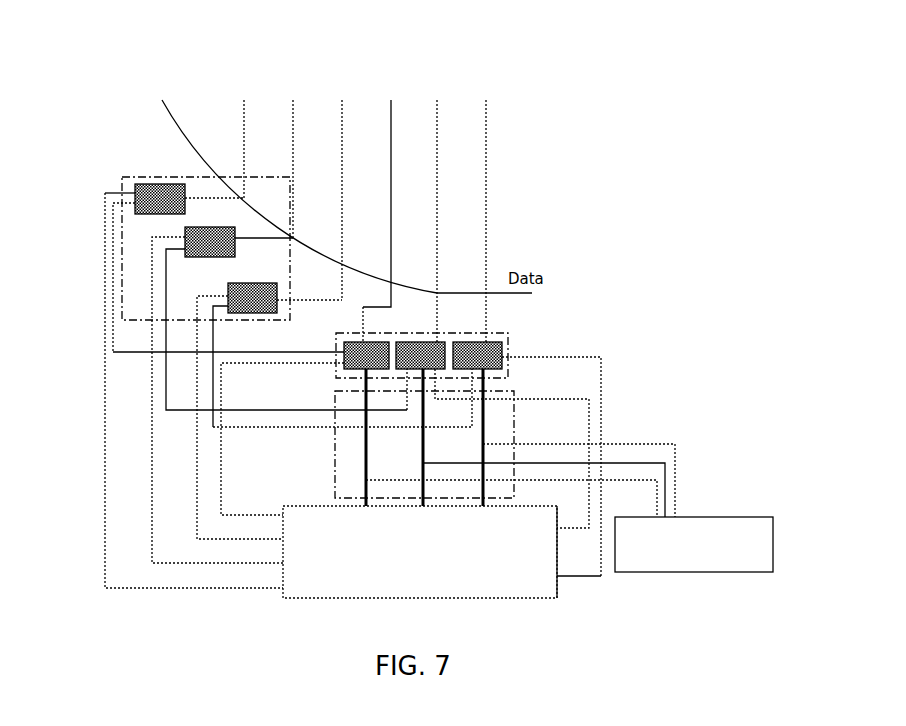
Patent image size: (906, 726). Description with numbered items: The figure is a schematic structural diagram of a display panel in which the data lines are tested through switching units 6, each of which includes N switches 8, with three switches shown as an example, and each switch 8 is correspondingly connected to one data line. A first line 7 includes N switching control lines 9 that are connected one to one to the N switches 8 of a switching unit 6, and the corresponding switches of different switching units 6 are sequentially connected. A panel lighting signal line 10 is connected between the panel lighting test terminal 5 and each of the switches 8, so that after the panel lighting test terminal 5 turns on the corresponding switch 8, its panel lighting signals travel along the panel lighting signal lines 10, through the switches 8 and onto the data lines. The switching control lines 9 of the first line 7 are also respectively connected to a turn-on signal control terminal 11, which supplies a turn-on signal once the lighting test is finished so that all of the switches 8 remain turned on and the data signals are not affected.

The panel lighting test terminal 5 is at (303, 503).
The switching unit 6 is at (187, 178).
The first line 7 is at (335, 462).
The switch 8 is at (142, 183).
The switching control line 9 is at (484, 388).
The panel lighting signal line 10 is at (105, 443).
The turn-on signal control terminal 11 is at (703, 513).